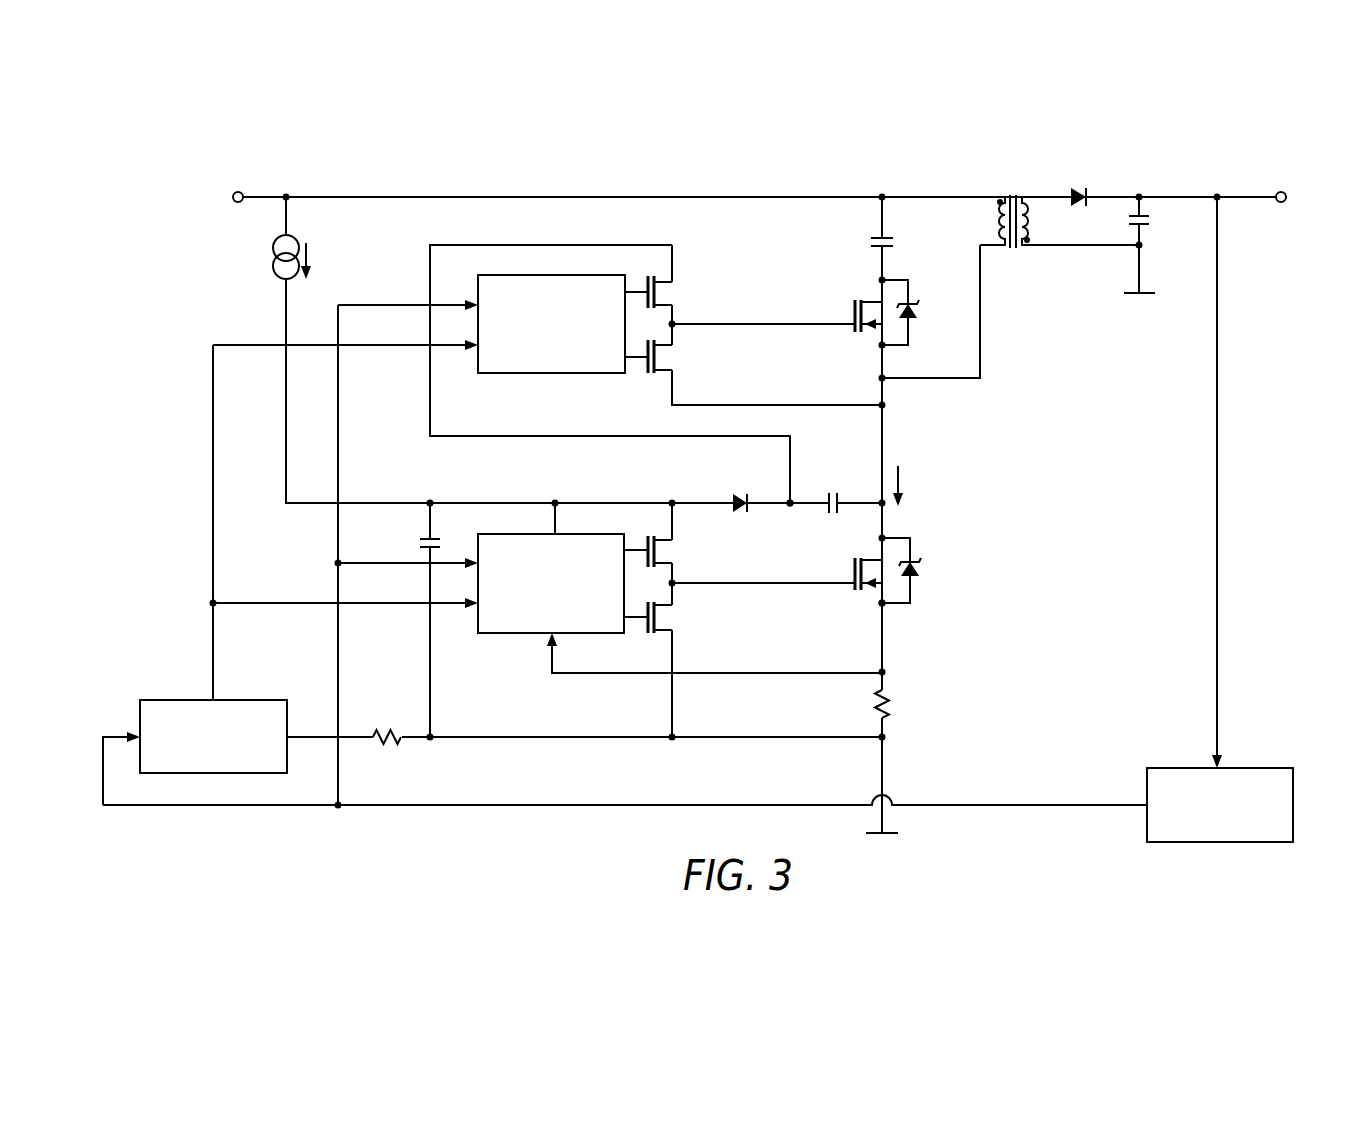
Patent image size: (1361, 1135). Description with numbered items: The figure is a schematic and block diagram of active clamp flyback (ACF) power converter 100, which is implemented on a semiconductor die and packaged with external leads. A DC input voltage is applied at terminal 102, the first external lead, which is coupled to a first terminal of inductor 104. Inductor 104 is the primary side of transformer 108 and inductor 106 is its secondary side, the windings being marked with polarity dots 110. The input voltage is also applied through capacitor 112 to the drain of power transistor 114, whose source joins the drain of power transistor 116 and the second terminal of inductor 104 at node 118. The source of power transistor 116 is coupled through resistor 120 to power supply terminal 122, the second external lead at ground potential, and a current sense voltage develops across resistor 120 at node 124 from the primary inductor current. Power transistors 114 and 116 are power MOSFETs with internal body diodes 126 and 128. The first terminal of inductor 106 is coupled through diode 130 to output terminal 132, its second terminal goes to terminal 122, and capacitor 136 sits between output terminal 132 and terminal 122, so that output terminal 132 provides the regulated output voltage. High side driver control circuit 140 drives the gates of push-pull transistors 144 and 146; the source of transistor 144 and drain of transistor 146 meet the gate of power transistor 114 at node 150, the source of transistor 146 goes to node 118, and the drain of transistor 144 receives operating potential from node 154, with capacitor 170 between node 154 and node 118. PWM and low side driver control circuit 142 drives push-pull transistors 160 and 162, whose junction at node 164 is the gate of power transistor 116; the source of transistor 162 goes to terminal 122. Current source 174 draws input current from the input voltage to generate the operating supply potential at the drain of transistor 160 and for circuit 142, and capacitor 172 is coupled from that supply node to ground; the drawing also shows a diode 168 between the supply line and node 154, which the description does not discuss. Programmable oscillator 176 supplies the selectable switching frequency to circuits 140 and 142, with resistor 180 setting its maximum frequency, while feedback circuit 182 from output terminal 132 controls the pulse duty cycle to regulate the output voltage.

The active clamp flyback power converter 100 is at (1194, 88).
The terminal 102 is at (237, 192).
The inductor 104 is at (1003, 195).
The inductor 106 is at (1023, 195).
The transformer 108 is at (1013, 250).
The polarity dots 110 is at (999, 205).
The capacitor 112 is at (871, 241).
The power transistor 114 is at (852, 318).
The power transistor 116 is at (852, 578).
The node 118 is at (885, 407).
The resistor 120 is at (890, 706).
The power supply terminal 122 is at (1149, 296).
The node 124 is at (880, 605).
The internal body diode 126 is at (916, 311).
The internal body diode 128 is at (917, 571).
The diode 130 is at (1087, 184).
The output terminal 132 is at (1282, 190).
The capacitor 136 is at (1146, 220).
The high side driver control circuit 140 is at (531, 378).
The PWM and low side driver control circuit 142 is at (515, 634).
The push-pull transistor 144 is at (660, 293).
The push-pull transistor 146 is at (660, 359).
The node 150 is at (676, 323).
The node 154 is at (790, 507).
The push-pull transistor 160 is at (660, 551).
The push-pull transistor 162 is at (660, 619).
The node 164 is at (676, 582).
The bootstrap diode 168 is at (741, 490).
The capacitor 170 is at (830, 497).
The capacitor 172 is at (425, 543).
The current source 174 is at (277, 256).
The programmable oscillator 176 is at (178, 698).
The resistor 180 is at (385, 733).
The feedback circuit 182 is at (1296, 805).